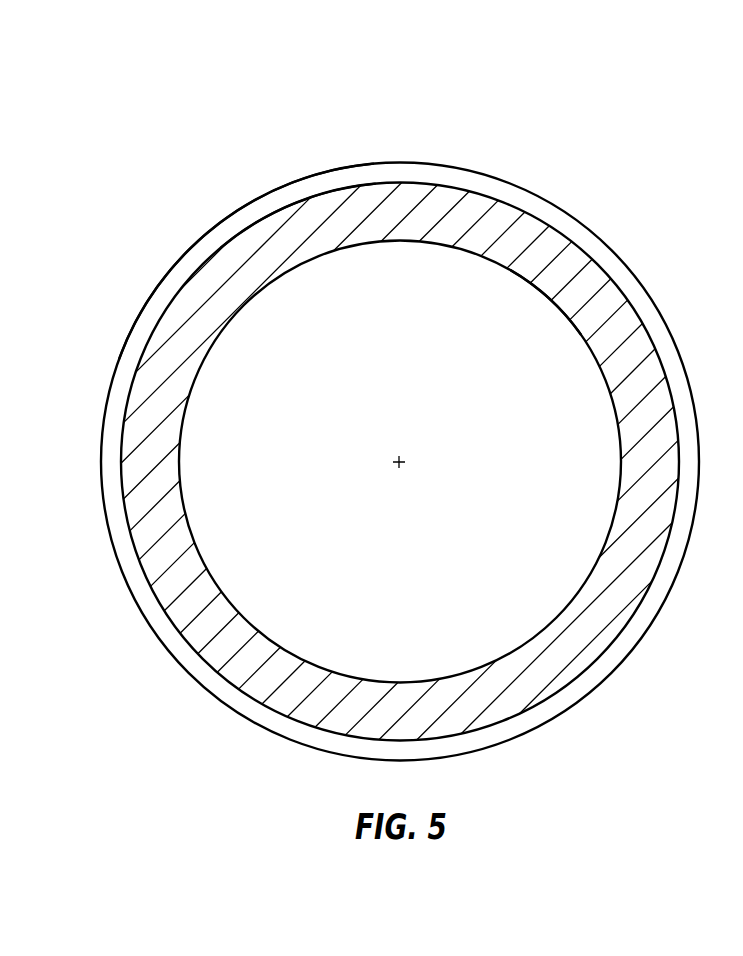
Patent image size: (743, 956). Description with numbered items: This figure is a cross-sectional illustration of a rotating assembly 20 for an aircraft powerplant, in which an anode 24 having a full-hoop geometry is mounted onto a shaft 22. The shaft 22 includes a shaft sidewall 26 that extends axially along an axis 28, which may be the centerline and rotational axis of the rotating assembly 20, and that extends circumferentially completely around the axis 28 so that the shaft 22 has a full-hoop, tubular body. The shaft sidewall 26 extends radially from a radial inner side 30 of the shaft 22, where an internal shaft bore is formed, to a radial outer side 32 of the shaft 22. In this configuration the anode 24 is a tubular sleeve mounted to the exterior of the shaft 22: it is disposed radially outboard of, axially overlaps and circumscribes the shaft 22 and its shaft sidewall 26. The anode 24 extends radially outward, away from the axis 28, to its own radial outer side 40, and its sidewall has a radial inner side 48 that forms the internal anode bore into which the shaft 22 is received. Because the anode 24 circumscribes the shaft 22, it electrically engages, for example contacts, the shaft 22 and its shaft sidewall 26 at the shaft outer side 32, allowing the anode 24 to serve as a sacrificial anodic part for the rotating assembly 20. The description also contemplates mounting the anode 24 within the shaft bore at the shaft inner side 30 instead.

The rotating assembly 20 is at (660, 73).
The shaft 22 is at (446, 257).
The anode 24 is at (488, 160).
The shaft sidewall 26 is at (607, 297).
The axis 28 is at (400, 461).
The radial inner side 30 is at (531, 283).
The radial outer side 32 is at (658, 353).
The radial outer side 40 is at (300, 177).
The radial inner side 48 is at (287, 210).